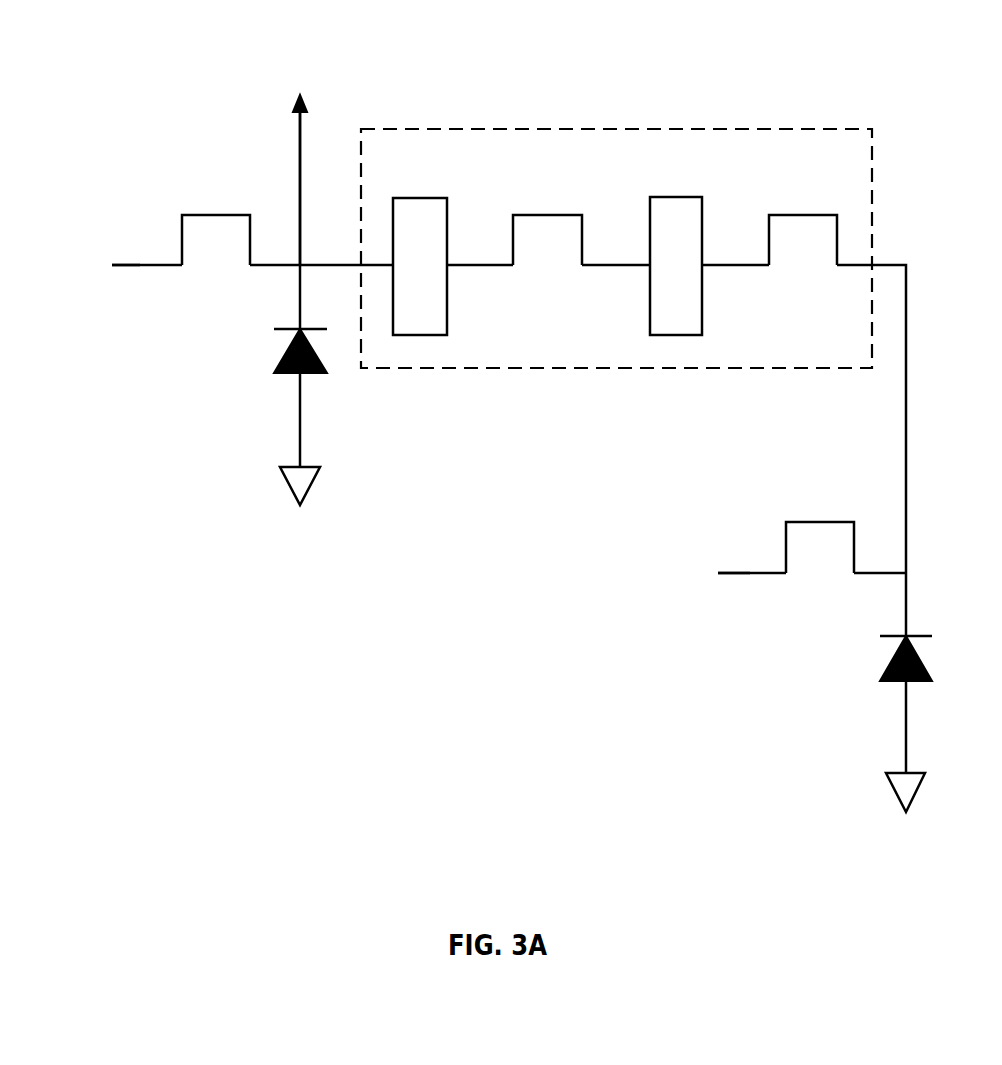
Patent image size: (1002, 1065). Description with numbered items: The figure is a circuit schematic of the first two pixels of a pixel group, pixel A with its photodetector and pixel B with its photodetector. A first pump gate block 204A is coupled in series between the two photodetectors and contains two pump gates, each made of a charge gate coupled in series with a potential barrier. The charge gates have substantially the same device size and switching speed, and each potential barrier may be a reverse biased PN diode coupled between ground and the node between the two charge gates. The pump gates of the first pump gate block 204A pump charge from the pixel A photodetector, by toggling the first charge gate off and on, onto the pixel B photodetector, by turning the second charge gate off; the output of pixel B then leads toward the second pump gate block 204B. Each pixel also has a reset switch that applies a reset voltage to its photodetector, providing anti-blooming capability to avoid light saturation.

The first pump gate block 204A is at (873, 172).
The second pump gate block 204B is at (301, 149).